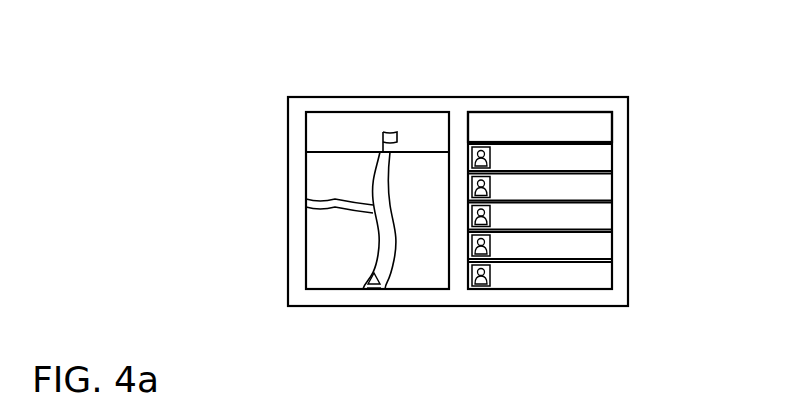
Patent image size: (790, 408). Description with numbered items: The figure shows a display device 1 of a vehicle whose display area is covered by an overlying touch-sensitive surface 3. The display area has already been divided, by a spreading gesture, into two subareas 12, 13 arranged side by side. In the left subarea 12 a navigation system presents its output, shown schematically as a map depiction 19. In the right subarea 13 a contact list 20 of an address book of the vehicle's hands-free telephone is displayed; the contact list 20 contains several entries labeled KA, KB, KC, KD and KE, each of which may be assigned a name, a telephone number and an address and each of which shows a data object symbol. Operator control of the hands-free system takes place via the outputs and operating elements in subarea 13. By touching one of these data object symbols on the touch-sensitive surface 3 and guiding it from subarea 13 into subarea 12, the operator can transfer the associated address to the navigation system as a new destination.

The display device 1 is at (628, 111).
The touch-sensitive surface 3 is at (543, 107).
The subarea 12 is at (323, 136).
The subarea 13 is at (598, 131).
The map depiction 19 is at (403, 145).
The contact list 20 is at (610, 214).